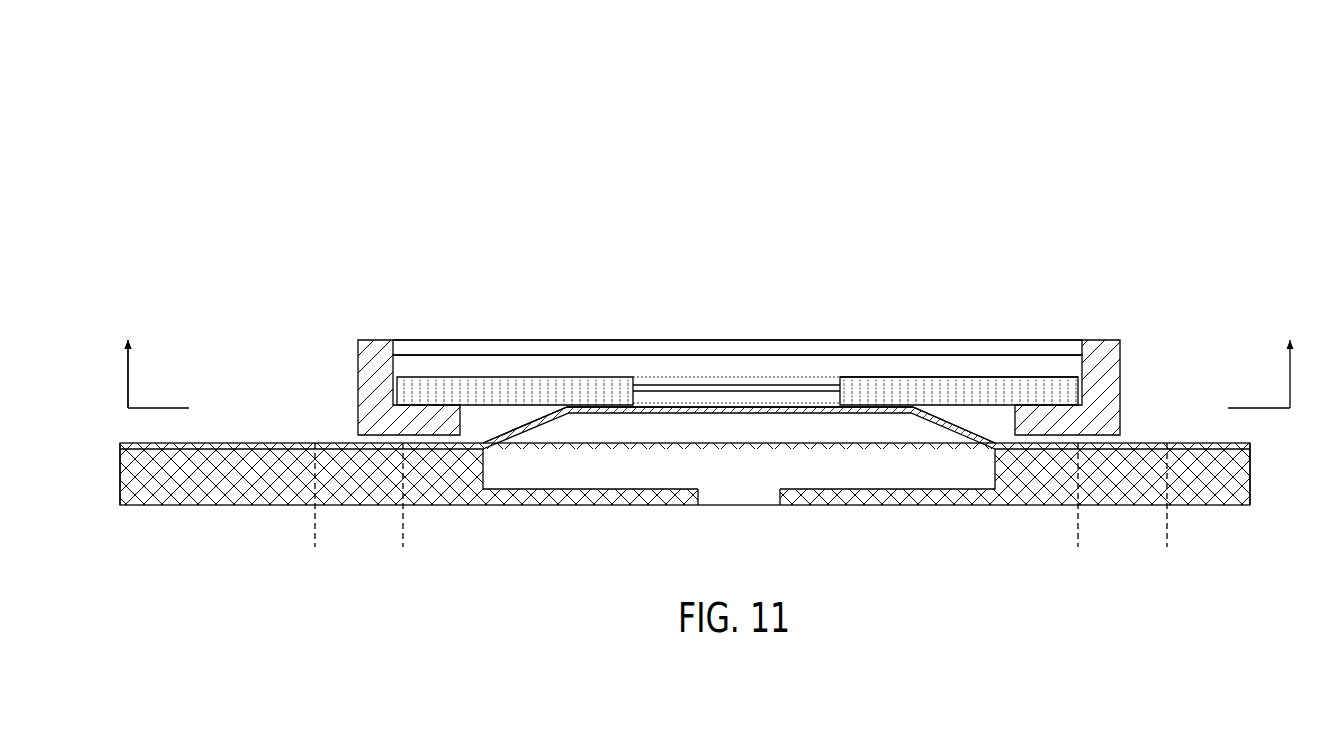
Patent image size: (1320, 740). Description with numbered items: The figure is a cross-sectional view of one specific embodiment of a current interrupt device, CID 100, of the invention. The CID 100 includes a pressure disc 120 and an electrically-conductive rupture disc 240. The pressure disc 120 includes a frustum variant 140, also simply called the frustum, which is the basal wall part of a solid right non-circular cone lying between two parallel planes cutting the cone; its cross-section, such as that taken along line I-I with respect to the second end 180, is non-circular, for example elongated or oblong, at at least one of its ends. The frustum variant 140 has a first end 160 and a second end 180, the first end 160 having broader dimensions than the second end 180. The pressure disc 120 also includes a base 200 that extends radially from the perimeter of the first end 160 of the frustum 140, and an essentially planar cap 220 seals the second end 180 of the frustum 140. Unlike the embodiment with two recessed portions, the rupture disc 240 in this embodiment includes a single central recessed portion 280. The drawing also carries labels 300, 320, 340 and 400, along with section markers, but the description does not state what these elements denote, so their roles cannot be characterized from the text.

The CID 100 is at (210, 120).
The pressure disc 120 is at (957, 418).
The frustum variant 140 is at (522, 427).
The first end 160 is at (483, 442).
The second end 180 is at (564, 405).
The base 200 is at (333, 443).
The cap 220 is at (862, 405).
The rupture disc 240 is at (502, 372).
The central recessed portion 280 is at (707, 392).
The sloped portion 300 is at (983, 403).
The top surface of spacer 320 is at (933, 375).
The substrate end region 340 is at (1203, 443).
The cover plate 400 is at (654, 340).